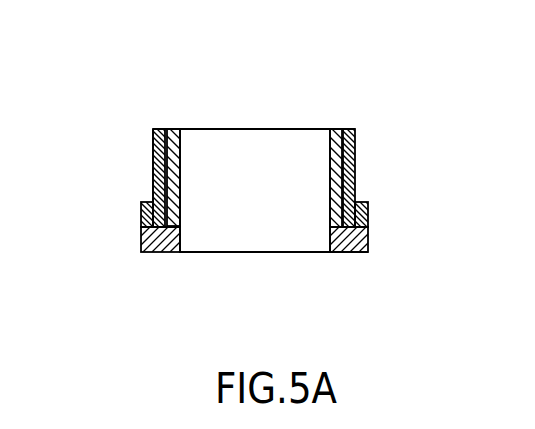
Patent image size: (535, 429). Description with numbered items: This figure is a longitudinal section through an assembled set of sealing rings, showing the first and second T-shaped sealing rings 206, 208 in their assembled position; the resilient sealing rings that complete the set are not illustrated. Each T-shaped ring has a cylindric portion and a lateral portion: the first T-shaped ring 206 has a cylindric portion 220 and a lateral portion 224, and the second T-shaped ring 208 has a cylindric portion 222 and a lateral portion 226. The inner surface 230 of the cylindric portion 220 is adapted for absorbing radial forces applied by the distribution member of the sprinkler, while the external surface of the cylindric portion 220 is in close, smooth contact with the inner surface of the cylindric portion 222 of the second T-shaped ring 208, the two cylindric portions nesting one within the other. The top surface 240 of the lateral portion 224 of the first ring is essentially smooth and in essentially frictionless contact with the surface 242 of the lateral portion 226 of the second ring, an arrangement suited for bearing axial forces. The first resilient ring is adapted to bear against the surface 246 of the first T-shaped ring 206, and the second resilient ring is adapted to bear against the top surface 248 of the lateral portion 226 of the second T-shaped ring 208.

The first T-shaped sealing ring 206 is at (175, 128).
The second T-shaped sealing ring 208 is at (158, 128).
The cylindric portion 220 is at (180, 172).
The cylindric portion 222 is at (152, 177).
The lateral portion 224 is at (143, 237).
The lateral portion 226 is at (143, 213).
The inner surface 230 is at (329, 165).
The top surface 240 is at (367, 218).
The surface 242 is at (152, 229).
The surface 246 is at (348, 253).
The top surface 248 is at (362, 203).